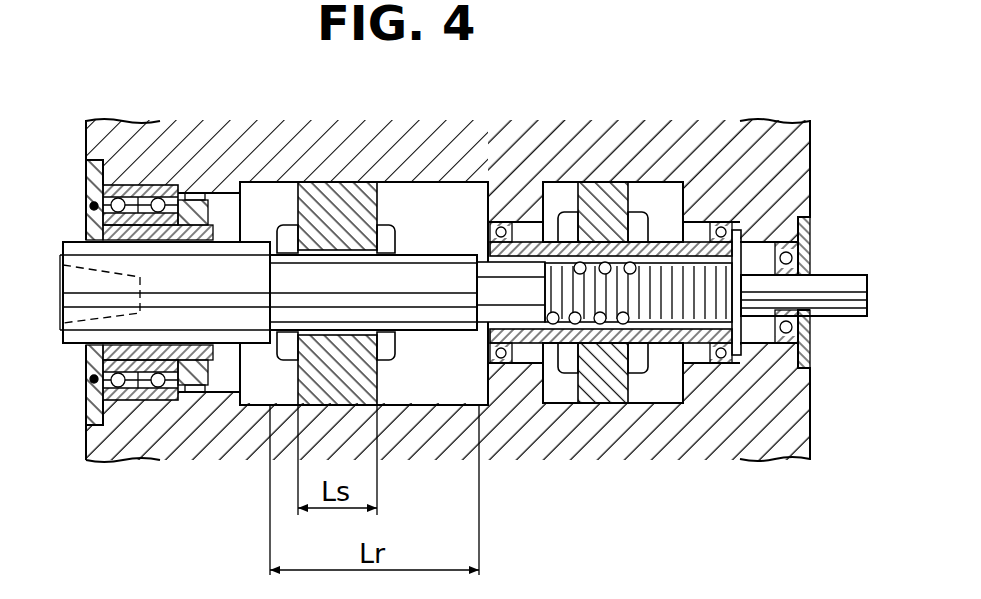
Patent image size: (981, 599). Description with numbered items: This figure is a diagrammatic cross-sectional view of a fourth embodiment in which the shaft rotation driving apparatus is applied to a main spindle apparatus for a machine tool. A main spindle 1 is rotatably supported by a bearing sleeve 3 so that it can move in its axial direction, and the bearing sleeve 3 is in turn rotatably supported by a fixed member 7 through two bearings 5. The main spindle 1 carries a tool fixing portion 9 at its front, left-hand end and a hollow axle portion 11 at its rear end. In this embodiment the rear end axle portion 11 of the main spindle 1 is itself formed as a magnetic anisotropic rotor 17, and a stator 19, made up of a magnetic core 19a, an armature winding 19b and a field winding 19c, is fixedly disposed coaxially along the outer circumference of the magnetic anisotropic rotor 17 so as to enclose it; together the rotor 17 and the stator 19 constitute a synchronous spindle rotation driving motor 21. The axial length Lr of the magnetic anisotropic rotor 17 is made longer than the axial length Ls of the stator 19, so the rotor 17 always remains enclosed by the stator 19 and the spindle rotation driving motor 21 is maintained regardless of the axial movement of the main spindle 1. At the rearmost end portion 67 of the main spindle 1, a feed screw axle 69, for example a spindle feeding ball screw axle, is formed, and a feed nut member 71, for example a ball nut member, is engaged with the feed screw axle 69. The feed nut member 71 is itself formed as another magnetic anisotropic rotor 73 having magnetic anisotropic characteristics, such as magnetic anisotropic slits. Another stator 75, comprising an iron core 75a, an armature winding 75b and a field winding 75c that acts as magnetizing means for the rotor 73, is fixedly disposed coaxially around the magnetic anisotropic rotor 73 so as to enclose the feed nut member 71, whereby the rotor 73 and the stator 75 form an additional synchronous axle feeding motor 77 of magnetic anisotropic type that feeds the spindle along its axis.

The main spindle 1 is at (239, 268).
The bearing sleeve 3 is at (133, 215).
The bearings 5 is at (172, 190).
The fixed member 7 is at (88, 142).
The tool fixing portion 9 is at (97, 317).
The hollow axle portion 11 is at (451, 272).
The magnetic anisotropic rotor 17 is at (326, 252).
The stator 19 is at (391, 204).
The magnetic core 19a is at (418, 348).
The armature winding 19b is at (395, 232).
The field winding 19c is at (292, 362).
The synchronous spindle rotation driving motor 21 is at (454, 342).
The rearmost end portion 67 is at (525, 230).
The feed screw axle 69 is at (703, 370).
The feed nut member 71 is at (688, 366).
The magnetic anisotropic rotor 73 is at (690, 208).
The stator 75 is at (643, 334).
The iron core 75a is at (598, 375).
The armature winding 75b is at (562, 375).
The field winding 75c is at (568, 215).
The synchronous axle feeding motor 77 is at (643, 204).